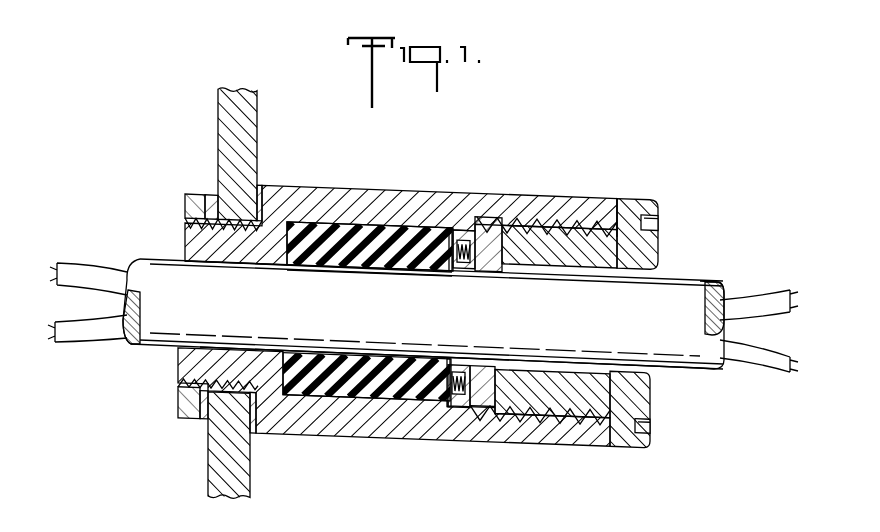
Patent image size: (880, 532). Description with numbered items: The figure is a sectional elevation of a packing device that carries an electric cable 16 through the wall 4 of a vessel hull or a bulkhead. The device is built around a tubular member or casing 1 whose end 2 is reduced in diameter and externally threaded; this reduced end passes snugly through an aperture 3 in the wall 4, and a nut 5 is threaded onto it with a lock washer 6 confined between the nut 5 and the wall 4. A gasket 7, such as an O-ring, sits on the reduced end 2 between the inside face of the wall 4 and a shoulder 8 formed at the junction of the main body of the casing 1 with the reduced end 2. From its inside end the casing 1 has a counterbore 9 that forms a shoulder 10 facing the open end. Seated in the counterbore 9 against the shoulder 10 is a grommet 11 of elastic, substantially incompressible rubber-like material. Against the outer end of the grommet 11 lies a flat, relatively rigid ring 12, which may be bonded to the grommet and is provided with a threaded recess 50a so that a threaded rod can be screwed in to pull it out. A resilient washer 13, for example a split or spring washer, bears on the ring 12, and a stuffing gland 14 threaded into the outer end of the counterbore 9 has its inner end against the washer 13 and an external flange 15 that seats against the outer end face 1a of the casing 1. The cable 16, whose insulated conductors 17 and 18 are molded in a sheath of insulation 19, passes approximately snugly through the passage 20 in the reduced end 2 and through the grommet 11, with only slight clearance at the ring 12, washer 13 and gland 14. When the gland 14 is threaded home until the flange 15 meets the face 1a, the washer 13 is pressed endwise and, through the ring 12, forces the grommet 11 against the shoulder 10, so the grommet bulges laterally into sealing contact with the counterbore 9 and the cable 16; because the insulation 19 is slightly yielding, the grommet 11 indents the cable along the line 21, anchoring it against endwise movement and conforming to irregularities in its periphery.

The tubular member or casing 1 is at (355, 186).
The outer end face 1a is at (612, 446).
The reduced end 2 is at (184, 378).
The aperture 3 is at (210, 402).
The wall 4 is at (238, 88).
The nut 5 is at (185, 205).
The lock washer 6 is at (212, 200).
The gasket 7 is at (263, 190).
The shoulder 8 is at (253, 436).
The counterbore 9 is at (449, 230).
The shoulder 10 is at (287, 268).
The grommet 11 is at (405, 226).
The ring 12 is at (470, 236).
The washer 13 is at (515, 230).
The stuffing gland 14 is at (576, 256).
The flange 15 is at (630, 200).
The electric cable 16 is at (137, 264).
The insulated conductor 17 is at (56, 322).
The insulated conductor 18 is at (58, 262).
The sheath of insulation 19 is at (128, 344).
The passage 20 is at (196, 350).
The line 21 is at (362, 276).
The threaded recess 50a is at (463, 264).